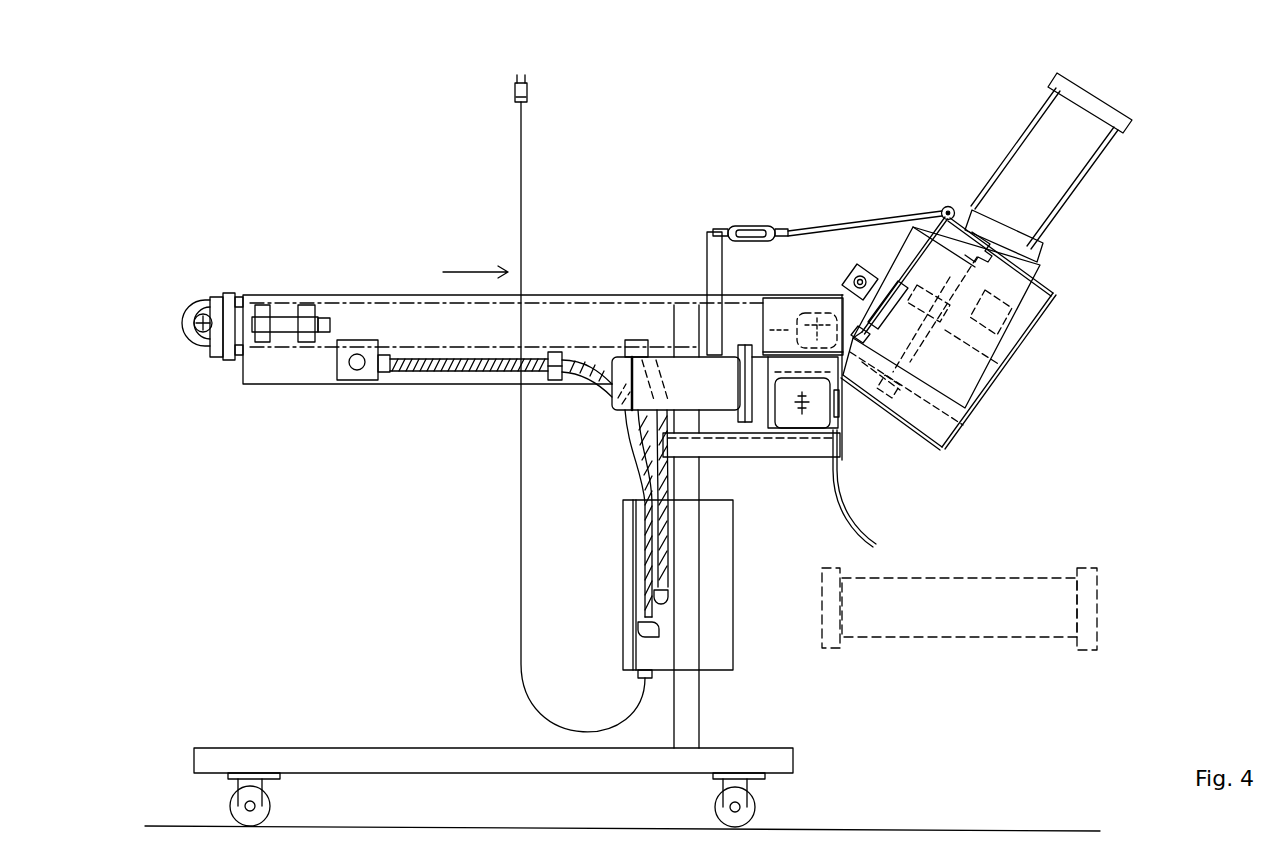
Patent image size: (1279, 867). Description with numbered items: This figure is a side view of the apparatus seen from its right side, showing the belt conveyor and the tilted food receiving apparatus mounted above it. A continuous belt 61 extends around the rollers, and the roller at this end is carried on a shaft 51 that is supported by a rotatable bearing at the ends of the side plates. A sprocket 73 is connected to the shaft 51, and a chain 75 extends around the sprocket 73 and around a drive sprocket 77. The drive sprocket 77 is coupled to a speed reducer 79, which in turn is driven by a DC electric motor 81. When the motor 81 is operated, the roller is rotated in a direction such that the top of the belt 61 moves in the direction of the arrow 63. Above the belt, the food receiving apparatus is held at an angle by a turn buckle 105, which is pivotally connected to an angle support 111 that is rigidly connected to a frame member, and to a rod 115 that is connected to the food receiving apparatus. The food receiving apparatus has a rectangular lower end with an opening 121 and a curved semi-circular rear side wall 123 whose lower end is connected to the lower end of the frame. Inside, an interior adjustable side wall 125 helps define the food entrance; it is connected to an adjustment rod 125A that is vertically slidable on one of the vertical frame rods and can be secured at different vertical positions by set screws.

The continuous belt 61 is at (415, 297).
The arrow 63 is at (486, 264).
The angle support 111 is at (707, 253).
The sprocket 73 is at (808, 313).
The shaft 51 is at (823, 315).
The chain 75 is at (792, 337).
The turn buckle 105 is at (866, 226).
The rod 115 is at (946, 207).
The interior adjustable side wall 125 is at (938, 258).
The adjustment rod 125A is at (893, 282).
The curved semi-circular rear side wall 123 is at (987, 348).
The opening 121 is at (890, 422).
The DC electric motor 81 is at (680, 383).
The speed reducer 79 is at (760, 390).
The drive sprocket 77 is at (790, 407).